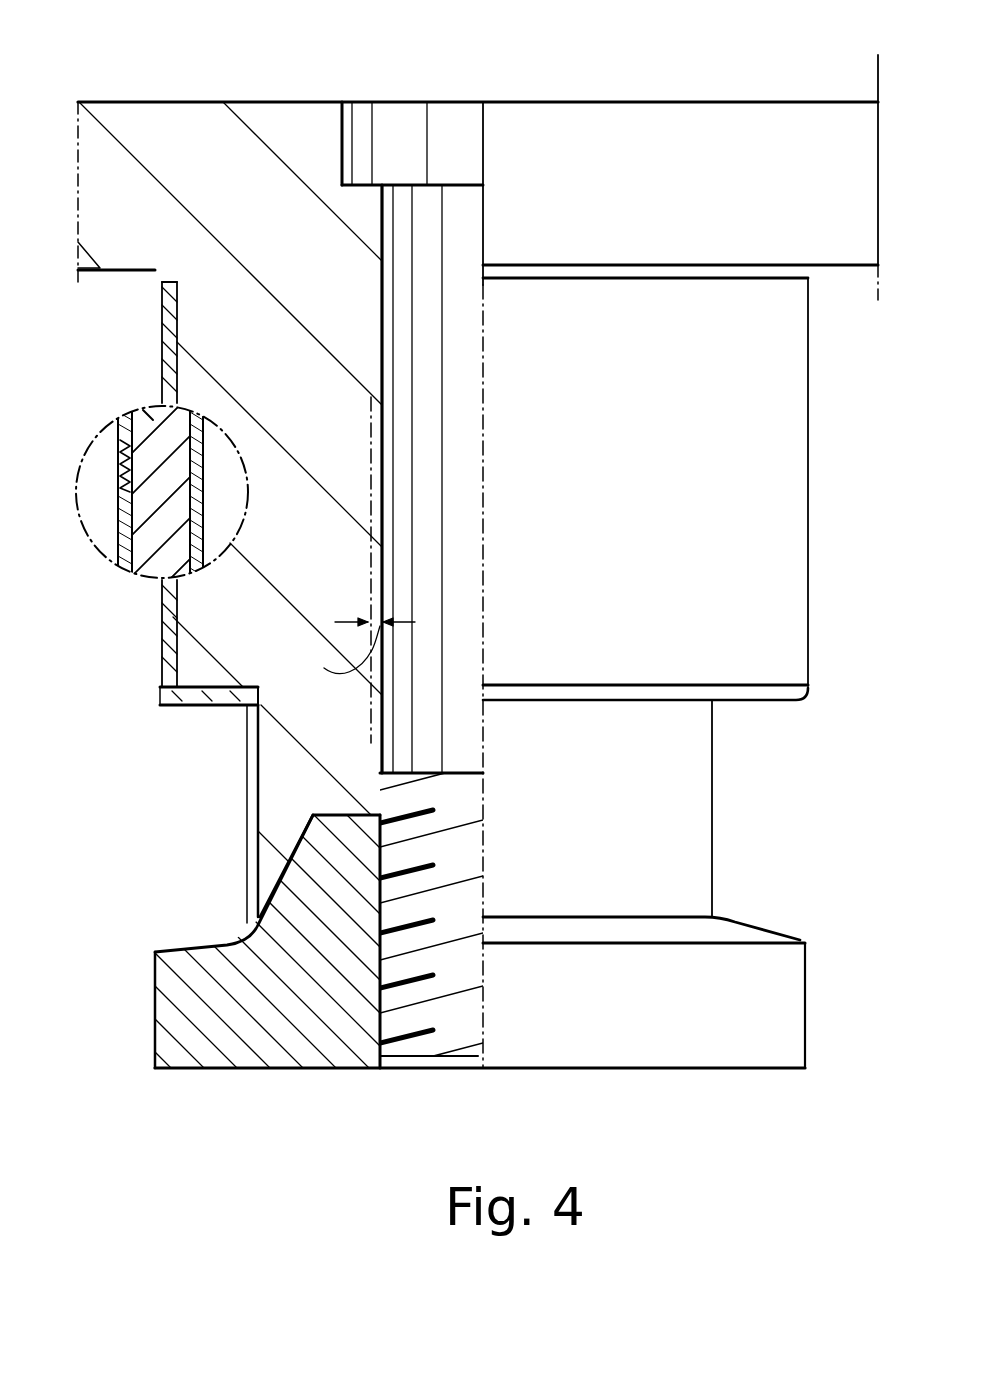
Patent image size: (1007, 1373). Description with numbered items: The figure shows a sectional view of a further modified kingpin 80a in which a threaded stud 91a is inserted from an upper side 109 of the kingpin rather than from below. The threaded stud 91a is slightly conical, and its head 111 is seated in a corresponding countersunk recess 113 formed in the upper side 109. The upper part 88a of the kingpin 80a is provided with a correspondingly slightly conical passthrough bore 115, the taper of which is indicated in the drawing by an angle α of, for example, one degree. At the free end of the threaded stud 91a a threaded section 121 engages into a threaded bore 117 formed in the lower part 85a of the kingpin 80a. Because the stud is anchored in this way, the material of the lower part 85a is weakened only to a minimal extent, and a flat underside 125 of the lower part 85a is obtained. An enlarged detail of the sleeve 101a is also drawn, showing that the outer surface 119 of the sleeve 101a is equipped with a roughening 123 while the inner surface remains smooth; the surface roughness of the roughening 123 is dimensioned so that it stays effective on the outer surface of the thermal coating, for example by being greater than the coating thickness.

The upper part 88a is at (213, 143).
The upper side 109 is at (623, 95).
The head 111 is at (412, 120).
The countersunk recess 113 is at (393, 174).
The passthrough bore 115 is at (377, 442).
The threaded stud 91a is at (467, 446).
The sleeve 101a is at (143, 403).
The roughening 123 is at (118, 488).
The outer surface 119 is at (120, 568).
The kingpin 80a is at (262, 1076).
The lower part 85a is at (327, 1043).
The threaded section 121 is at (475, 813).
The threaded bore 117 is at (398, 1012).
The underside 125 is at (580, 1068).